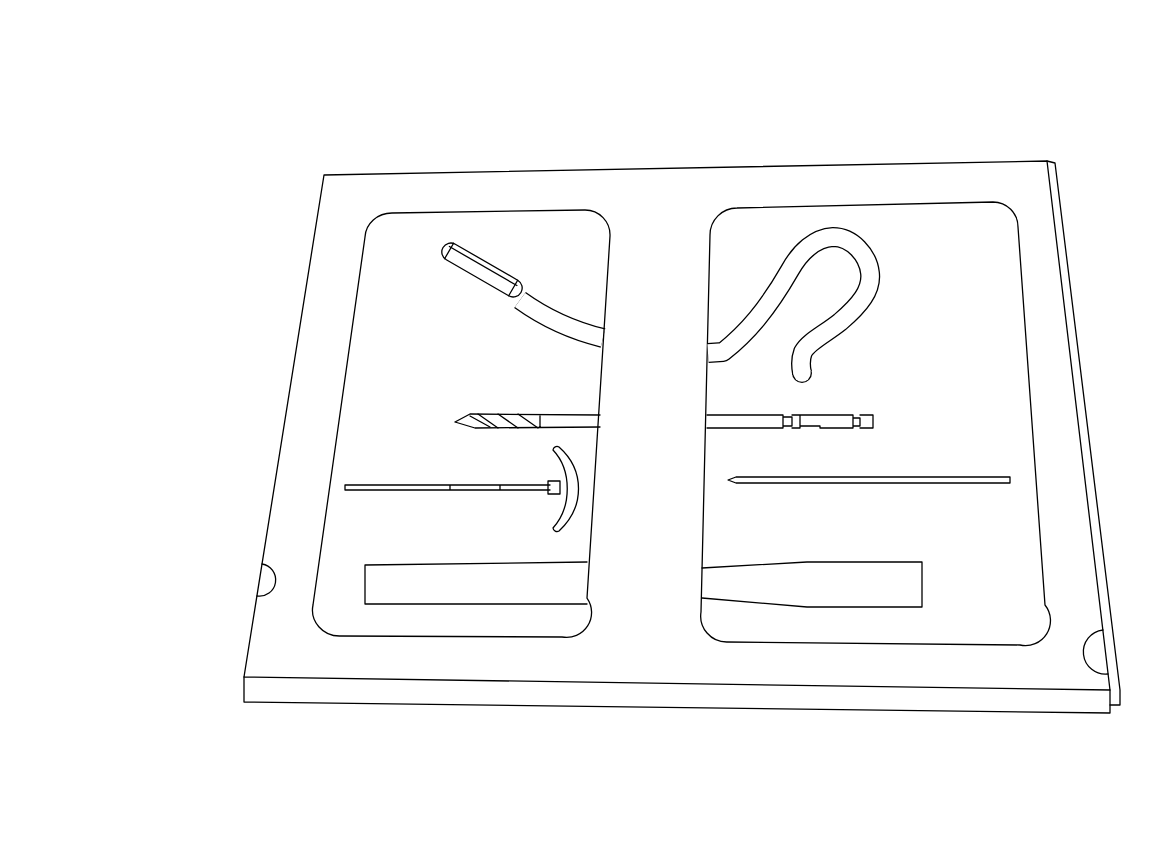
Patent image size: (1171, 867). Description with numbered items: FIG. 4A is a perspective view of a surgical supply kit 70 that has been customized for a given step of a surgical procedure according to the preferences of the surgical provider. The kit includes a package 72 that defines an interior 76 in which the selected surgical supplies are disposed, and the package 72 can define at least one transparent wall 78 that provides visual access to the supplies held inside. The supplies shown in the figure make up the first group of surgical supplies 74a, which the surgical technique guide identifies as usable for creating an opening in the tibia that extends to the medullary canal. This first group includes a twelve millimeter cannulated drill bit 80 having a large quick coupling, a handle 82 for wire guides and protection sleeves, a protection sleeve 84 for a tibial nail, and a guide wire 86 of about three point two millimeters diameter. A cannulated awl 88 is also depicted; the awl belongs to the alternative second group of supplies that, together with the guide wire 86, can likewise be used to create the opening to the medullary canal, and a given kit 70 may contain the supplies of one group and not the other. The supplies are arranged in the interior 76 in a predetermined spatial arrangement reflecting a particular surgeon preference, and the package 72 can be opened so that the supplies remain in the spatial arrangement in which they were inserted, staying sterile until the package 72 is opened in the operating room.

The surgical supply kit 70 is at (487, 150).
The package 72 is at (660, 167).
The first group of surgical supplies 74a is at (840, 408).
The interior 76 is at (413, 337).
The transparent wall 78 is at (918, 257).
The cannulated drill bit 80 is at (450, 420).
The handle 82 is at (400, 490).
The protection sleeve 84 is at (763, 607).
The guide wire 86 is at (987, 476).
The cannulated awl 88 is at (823, 242).